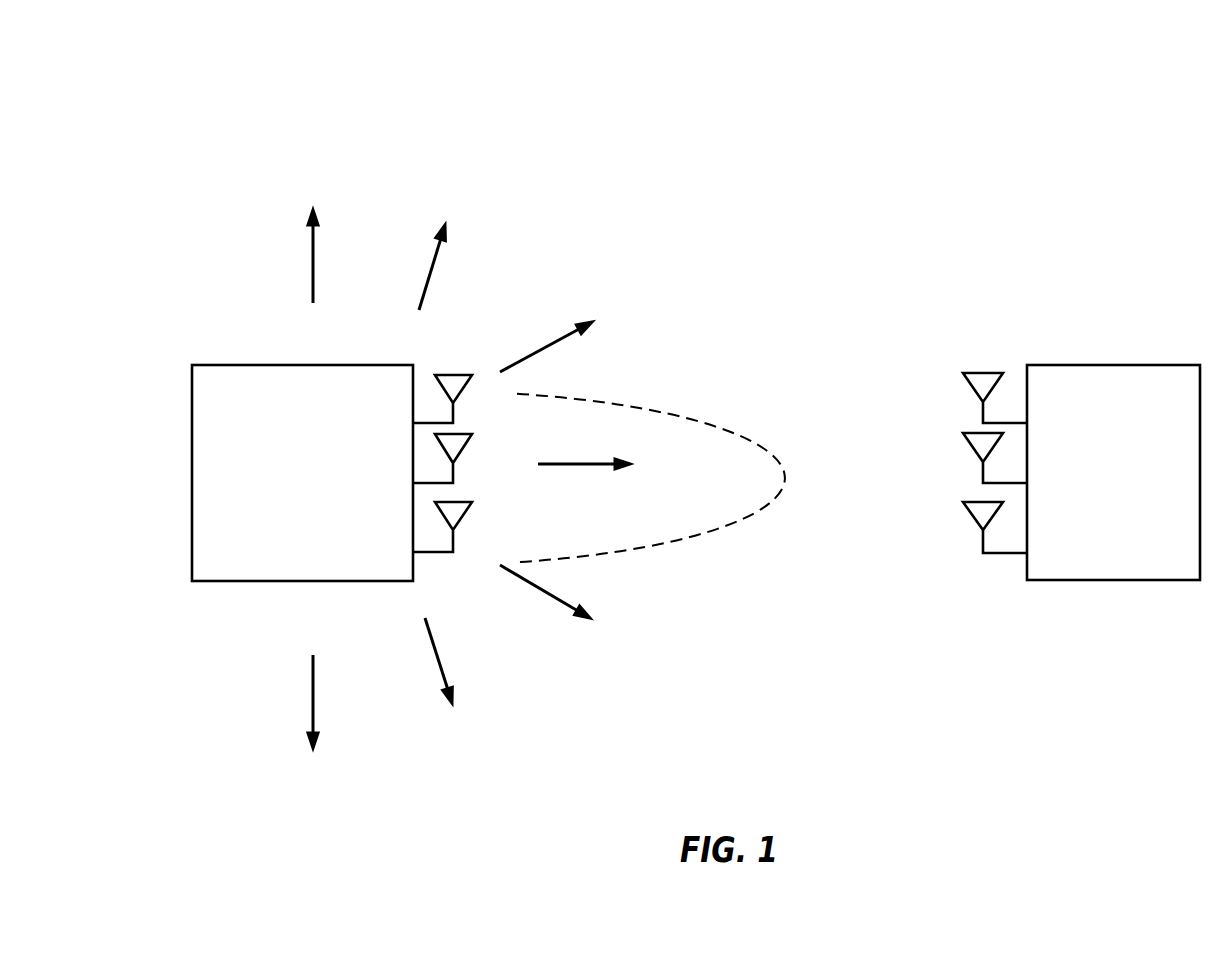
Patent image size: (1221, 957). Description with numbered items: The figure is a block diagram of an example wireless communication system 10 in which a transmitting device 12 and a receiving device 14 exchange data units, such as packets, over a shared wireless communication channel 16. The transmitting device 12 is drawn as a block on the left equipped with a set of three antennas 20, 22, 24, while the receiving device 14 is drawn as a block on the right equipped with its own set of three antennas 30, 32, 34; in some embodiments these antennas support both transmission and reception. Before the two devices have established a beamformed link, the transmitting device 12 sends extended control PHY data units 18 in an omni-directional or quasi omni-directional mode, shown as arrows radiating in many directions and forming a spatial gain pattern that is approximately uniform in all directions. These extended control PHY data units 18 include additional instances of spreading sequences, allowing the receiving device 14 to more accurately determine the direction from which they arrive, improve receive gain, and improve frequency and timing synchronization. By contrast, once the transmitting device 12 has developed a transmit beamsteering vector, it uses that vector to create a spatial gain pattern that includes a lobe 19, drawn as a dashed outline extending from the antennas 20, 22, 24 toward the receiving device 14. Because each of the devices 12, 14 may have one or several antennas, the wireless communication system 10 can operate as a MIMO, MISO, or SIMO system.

The wireless communication system 10 is at (777, 100).
The transmitting device 12 is at (322, 582).
The receiving device 14 is at (1095, 582).
The shared wireless communication channel 16 is at (800, 296).
The extended control PHY data units 18 is at (539, 350).
The lobe 19 is at (719, 535).
The antenna 20 is at (456, 373).
The antenna 22 is at (462, 455).
The antenna 24 is at (462, 522).
The antenna 30 is at (983, 372).
The antenna 32 is at (973, 452).
The antenna 34 is at (973, 517).